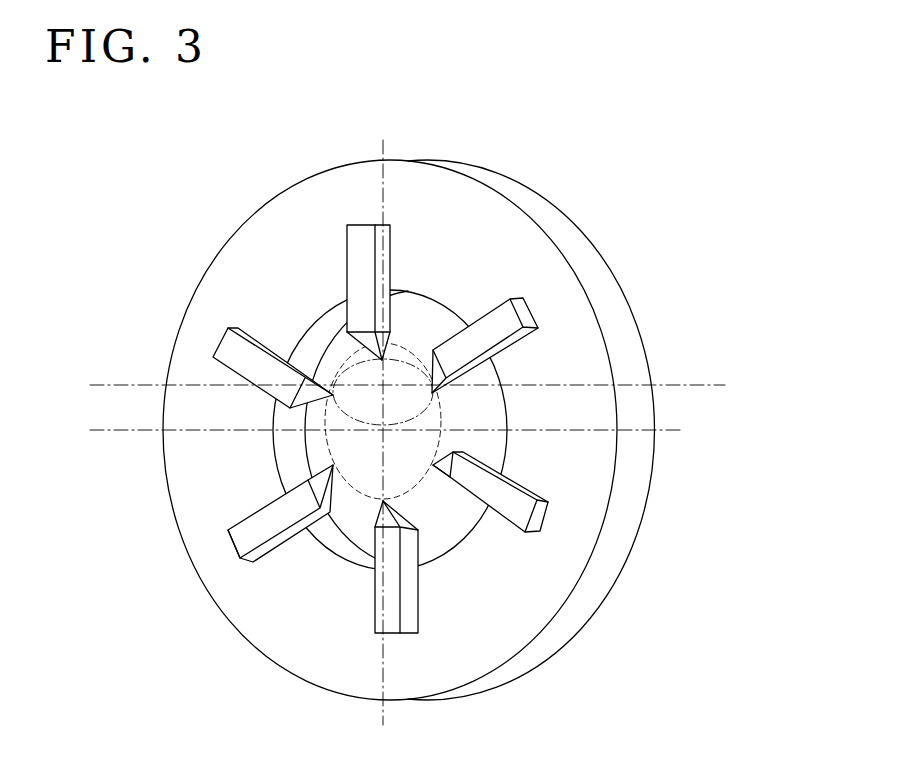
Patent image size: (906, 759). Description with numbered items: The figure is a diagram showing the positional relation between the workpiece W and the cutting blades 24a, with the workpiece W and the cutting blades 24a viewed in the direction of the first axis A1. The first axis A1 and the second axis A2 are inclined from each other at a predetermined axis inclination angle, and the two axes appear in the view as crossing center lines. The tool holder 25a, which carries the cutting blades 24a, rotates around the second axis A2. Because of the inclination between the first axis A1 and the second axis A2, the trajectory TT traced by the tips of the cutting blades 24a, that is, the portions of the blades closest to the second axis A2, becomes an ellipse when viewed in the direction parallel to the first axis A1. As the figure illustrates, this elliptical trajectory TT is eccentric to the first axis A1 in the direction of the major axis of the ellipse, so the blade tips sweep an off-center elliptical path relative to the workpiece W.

The cutting blades 24a is at (525, 312).
The tool holder 25a is at (625, 332).
The workpiece W is at (383, 378).
The trajectory TT is at (322, 442).
The first axis A1 is at (362, 383).
The second axis A2 is at (403, 436).